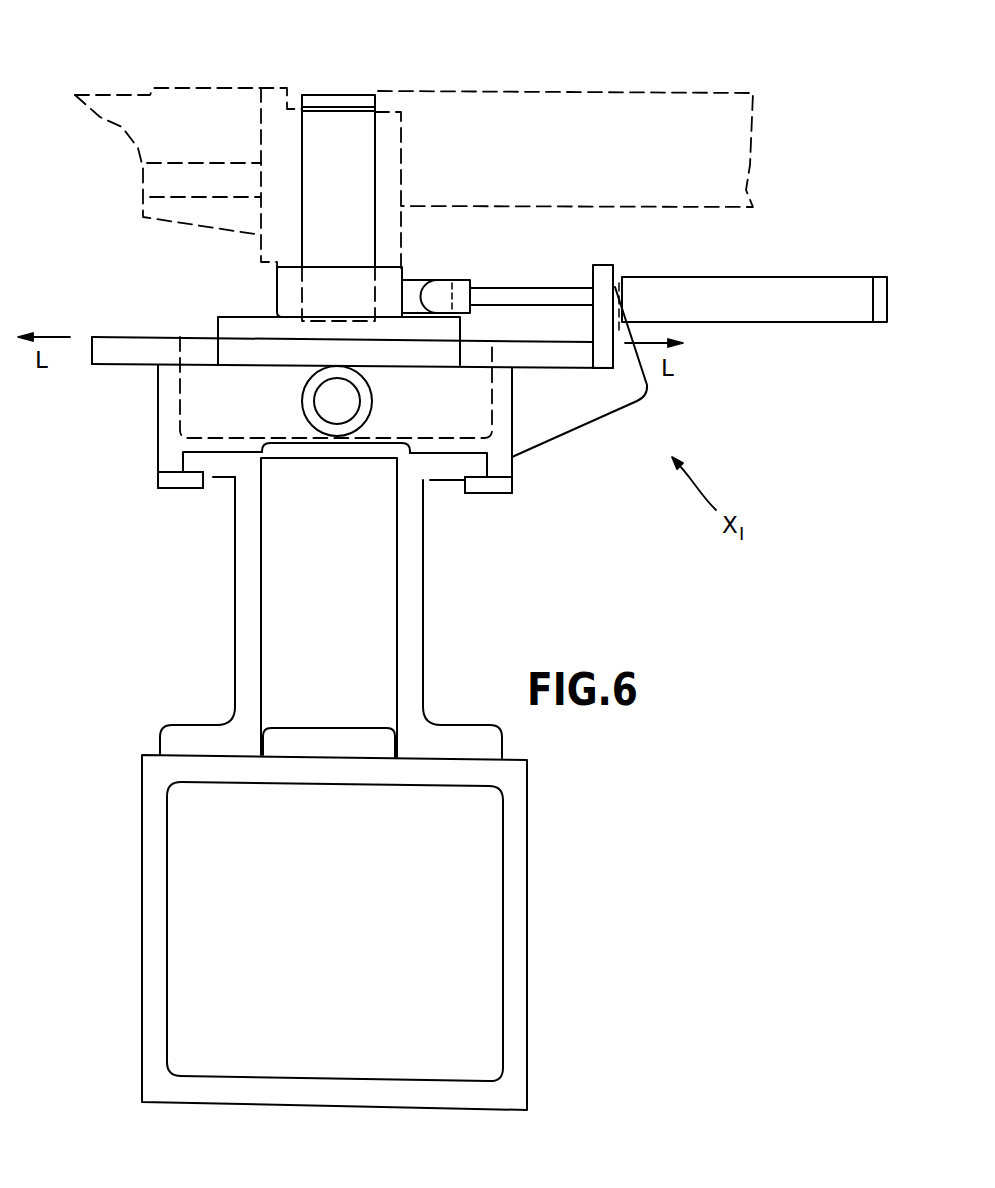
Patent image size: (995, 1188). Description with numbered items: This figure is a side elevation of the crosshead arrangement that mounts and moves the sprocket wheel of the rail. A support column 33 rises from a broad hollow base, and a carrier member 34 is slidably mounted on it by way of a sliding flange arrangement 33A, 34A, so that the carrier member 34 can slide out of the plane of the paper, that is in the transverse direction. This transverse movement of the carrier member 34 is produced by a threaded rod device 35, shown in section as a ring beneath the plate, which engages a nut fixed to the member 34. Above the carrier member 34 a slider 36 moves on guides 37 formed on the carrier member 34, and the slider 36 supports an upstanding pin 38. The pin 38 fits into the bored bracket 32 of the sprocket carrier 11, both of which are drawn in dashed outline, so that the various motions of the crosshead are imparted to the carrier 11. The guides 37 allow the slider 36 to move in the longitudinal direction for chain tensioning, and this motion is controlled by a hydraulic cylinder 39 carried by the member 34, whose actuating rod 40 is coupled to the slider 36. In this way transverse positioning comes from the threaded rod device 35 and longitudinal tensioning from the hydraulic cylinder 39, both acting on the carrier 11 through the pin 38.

The sprocket carrier 11 is at (208, 91).
The bored bracket 32 is at (400, 122).
The support column 33 is at (245, 633).
The sliding flange arrangement 33A is at (205, 463).
The carrier member 34 is at (160, 414).
The sliding flange arrangement 34A is at (192, 488).
The threaded rod device 35 is at (352, 428).
The slider 36 is at (232, 323).
The guides 37 is at (113, 346).
The pin 38 is at (365, 236).
The hydraulic cylinder 39 is at (743, 310).
The actuating rod 40 is at (537, 298).